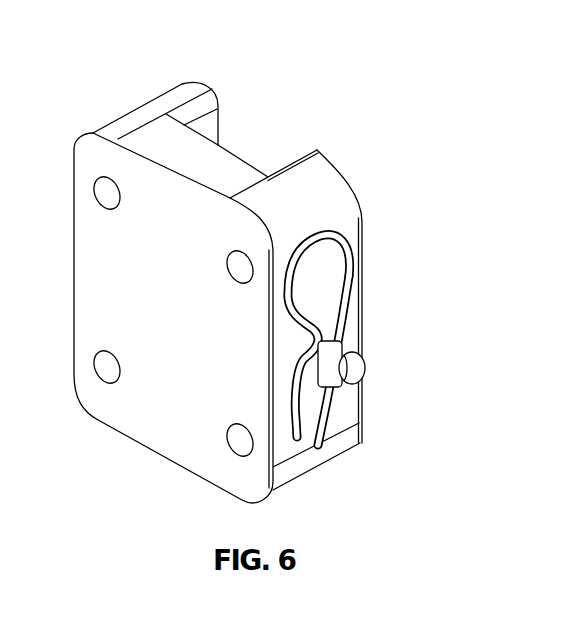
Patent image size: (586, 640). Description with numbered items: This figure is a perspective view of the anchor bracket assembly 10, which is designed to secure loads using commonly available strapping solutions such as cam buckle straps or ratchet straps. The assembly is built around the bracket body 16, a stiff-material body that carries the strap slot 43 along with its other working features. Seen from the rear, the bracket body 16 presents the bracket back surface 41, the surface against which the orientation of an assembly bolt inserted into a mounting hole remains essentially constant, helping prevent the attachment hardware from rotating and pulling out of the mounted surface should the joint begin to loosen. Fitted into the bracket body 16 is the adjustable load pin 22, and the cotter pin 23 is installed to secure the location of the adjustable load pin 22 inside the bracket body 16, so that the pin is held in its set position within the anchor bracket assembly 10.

The anchor bracket assembly 10 is at (201, 30).
The bracket body 16 is at (335, 177).
The adjustable load pin 22 is at (355, 370).
The cotter pin 23 is at (352, 262).
The bracket back surface 41 is at (178, 317).
The strap slot 43 is at (237, 141).